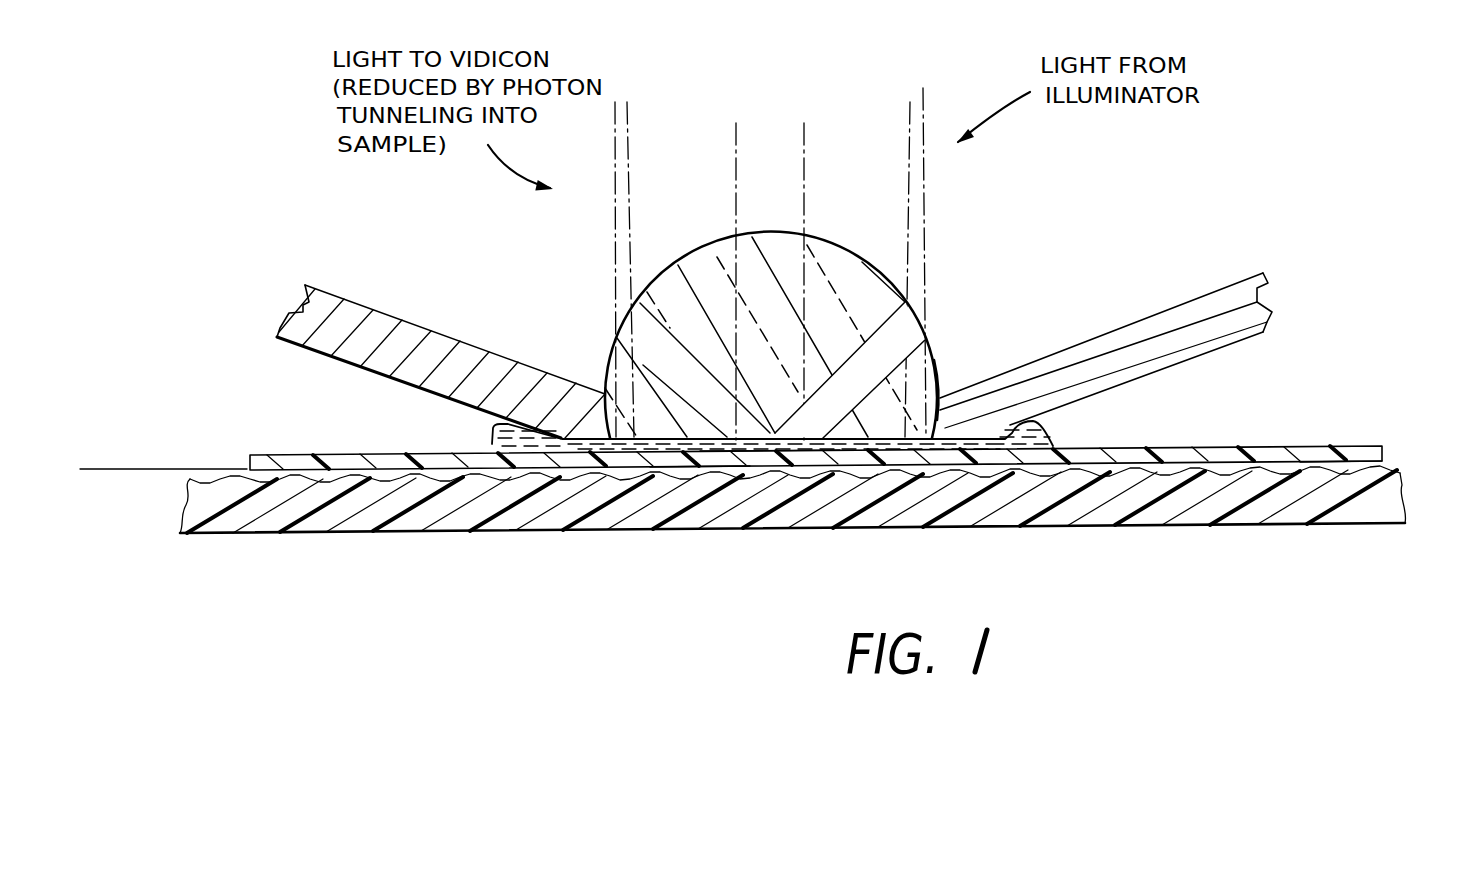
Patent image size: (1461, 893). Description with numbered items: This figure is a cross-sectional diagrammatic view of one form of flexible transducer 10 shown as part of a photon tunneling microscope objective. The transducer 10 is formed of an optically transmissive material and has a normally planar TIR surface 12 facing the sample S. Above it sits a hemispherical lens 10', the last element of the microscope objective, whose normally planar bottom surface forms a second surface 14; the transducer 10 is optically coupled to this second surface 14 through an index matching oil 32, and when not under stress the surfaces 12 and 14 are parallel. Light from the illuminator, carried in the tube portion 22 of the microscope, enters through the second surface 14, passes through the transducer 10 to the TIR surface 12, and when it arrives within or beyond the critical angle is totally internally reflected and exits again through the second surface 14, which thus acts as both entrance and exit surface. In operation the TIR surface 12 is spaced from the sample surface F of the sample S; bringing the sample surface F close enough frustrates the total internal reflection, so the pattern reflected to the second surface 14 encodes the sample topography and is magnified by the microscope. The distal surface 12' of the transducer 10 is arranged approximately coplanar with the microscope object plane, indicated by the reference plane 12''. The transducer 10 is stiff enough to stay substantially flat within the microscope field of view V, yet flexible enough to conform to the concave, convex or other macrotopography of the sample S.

The transducer 10 is at (817, 439).
The hemispherical lens 10' is at (771, 328).
The TIR surface 12 is at (770, 511).
The distal surface 12' is at (1379, 463).
The plane of transducer bottom surface 12'' is at (163, 447).
The second surface 14 is at (940, 368).
The tube portion 22 is at (412, 325).
The index matching oil 32 is at (482, 444).
The sample S is at (587, 531).
The sample surface F is at (697, 470).
The field of view V is at (800, 160).